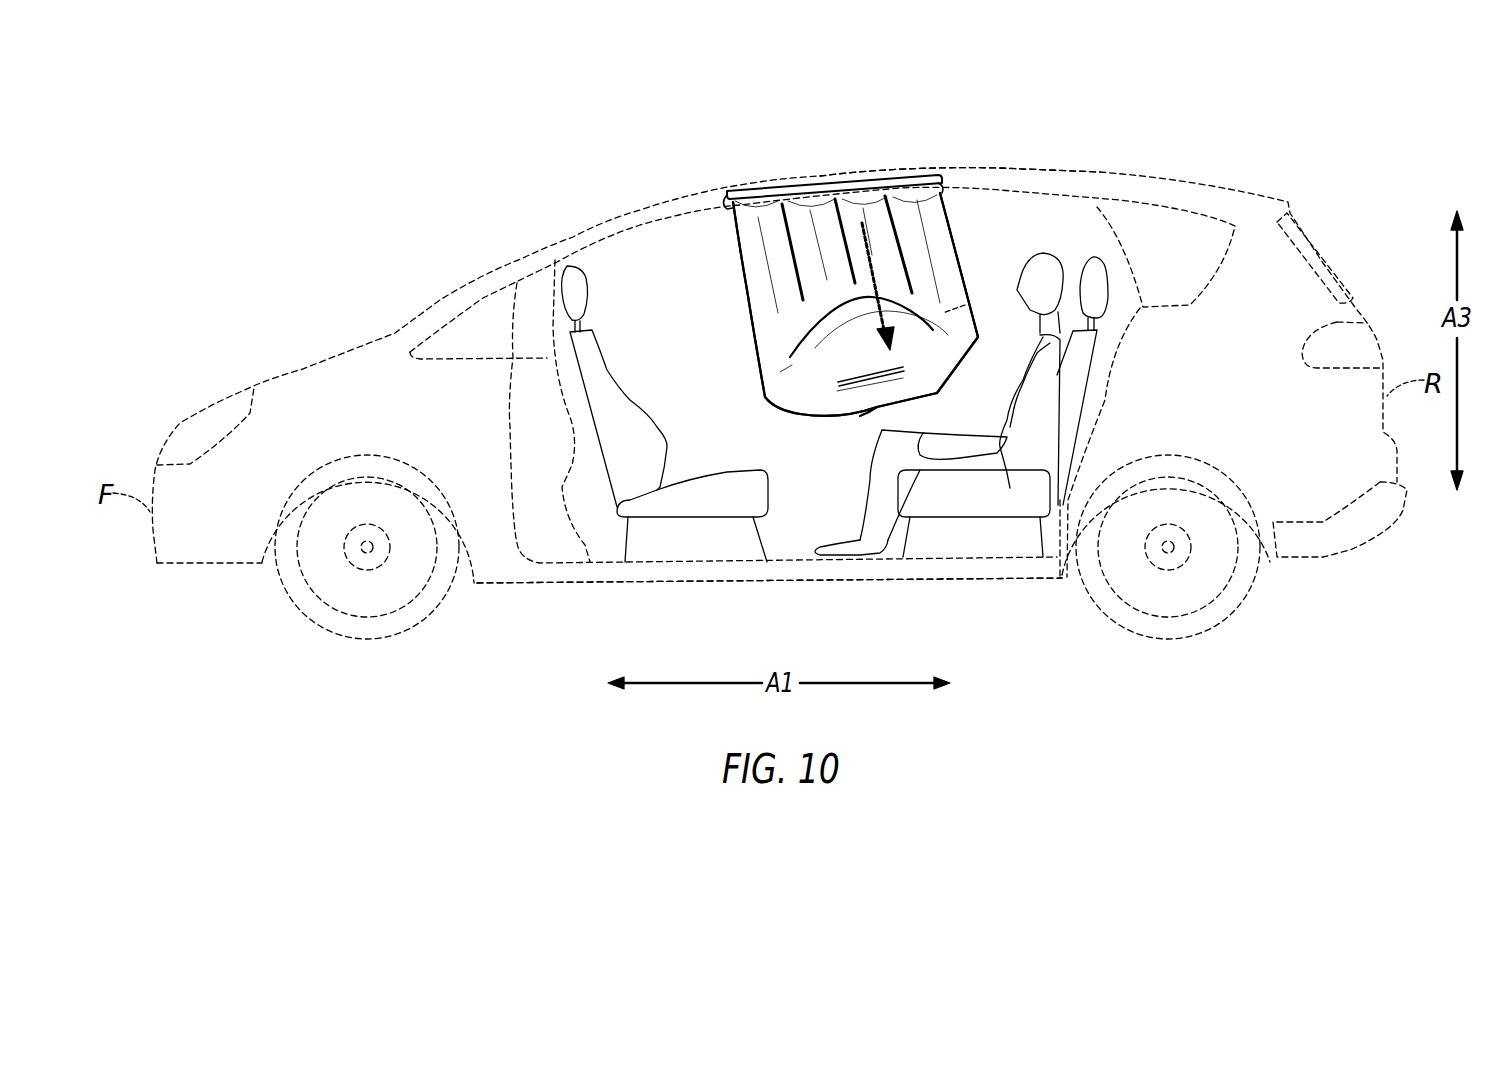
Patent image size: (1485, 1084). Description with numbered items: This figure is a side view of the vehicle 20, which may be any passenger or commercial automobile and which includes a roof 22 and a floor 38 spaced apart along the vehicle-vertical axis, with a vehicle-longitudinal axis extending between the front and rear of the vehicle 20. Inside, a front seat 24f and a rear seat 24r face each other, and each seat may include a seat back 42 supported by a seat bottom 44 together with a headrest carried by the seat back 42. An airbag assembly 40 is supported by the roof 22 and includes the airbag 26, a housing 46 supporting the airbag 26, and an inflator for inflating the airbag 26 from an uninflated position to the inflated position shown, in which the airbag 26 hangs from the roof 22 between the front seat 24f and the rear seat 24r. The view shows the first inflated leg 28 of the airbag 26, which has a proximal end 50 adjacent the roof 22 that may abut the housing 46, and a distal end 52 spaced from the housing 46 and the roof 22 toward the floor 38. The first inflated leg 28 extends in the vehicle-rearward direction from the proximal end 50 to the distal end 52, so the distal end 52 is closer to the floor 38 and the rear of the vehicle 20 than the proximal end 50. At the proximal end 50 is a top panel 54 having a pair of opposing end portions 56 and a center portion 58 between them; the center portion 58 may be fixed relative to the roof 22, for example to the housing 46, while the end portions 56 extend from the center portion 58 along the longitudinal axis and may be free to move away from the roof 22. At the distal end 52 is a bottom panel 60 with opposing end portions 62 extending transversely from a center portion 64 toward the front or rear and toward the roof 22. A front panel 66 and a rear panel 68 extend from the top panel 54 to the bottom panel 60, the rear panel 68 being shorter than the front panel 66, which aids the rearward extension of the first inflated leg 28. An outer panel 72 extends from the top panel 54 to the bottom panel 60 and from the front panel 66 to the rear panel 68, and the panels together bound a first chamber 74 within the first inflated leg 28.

The vehicle 20 is at (525, 262).
The roof 22 is at (1003, 183).
The front seat 24f is at (849, 444).
The rear seat 24r is at (1043, 507).
The airbag 26 is at (970, 220).
The first inflated leg 28 is at (848, 300).
The floor 38 is at (778, 568).
The airbag assembly 40 is at (843, 290).
The seat back 42 is at (617, 437).
The seat bottom 44 is at (692, 505).
The housing 46 is at (777, 190).
The proximal end 50 is at (863, 195).
The distal end 52 is at (847, 415).
The top panel 54 is at (900, 190).
The end portions 56 is at (727, 207).
The center portion 58 is at (820, 190).
The bottom panel 60 is at (912, 400).
The end portions 62 is at (787, 410).
The center portion 64 is at (887, 400).
The front panel 66 is at (752, 300).
The rear panel 68 is at (963, 277).
The outer panel 72 is at (856, 357).
The first chamber 74 is at (965, 305).